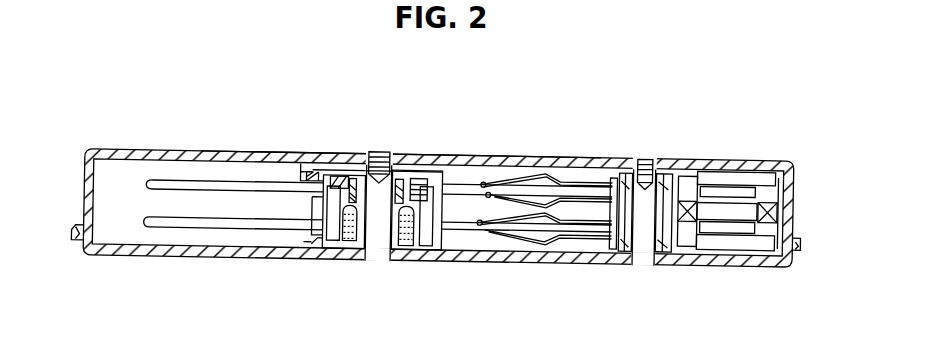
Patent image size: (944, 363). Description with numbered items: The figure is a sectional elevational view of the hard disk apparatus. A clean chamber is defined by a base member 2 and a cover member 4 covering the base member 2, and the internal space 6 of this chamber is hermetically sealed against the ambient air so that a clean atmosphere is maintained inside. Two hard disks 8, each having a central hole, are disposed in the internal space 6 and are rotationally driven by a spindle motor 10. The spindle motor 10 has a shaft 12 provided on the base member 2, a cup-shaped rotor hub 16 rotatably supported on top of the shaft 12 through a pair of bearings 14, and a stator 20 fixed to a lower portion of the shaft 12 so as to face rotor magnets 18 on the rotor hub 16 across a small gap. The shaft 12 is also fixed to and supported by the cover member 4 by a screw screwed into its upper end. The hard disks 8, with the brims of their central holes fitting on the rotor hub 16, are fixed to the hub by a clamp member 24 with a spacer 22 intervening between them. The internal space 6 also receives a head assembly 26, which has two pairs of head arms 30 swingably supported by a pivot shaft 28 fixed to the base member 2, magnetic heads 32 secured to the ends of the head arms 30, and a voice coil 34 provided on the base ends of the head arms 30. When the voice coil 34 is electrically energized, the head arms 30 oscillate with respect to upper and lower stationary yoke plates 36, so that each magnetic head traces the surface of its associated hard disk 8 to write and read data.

The base member 2 is at (520, 261).
The cover member 4 is at (533, 156).
The internal space 6 is at (127, 190).
The hard disk 8 is at (200, 190).
The spindle motor 10 is at (408, 168).
The shaft 12 is at (383, 252).
The bearings 14 is at (340, 174).
The rotor hub 16 is at (438, 241).
The rotor magnets 18 is at (423, 238).
The stator 20 is at (357, 235).
The spacer 22 is at (312, 205).
The clamp member 24 is at (303, 175).
The head assembly 26 is at (603, 249).
The pivot shaft 28 is at (650, 258).
The head arms 30 is at (580, 180).
The magnetic heads 32 is at (485, 182).
The voice coil 34 is at (806, 207).
The stationary yoke plates 36 is at (733, 168).